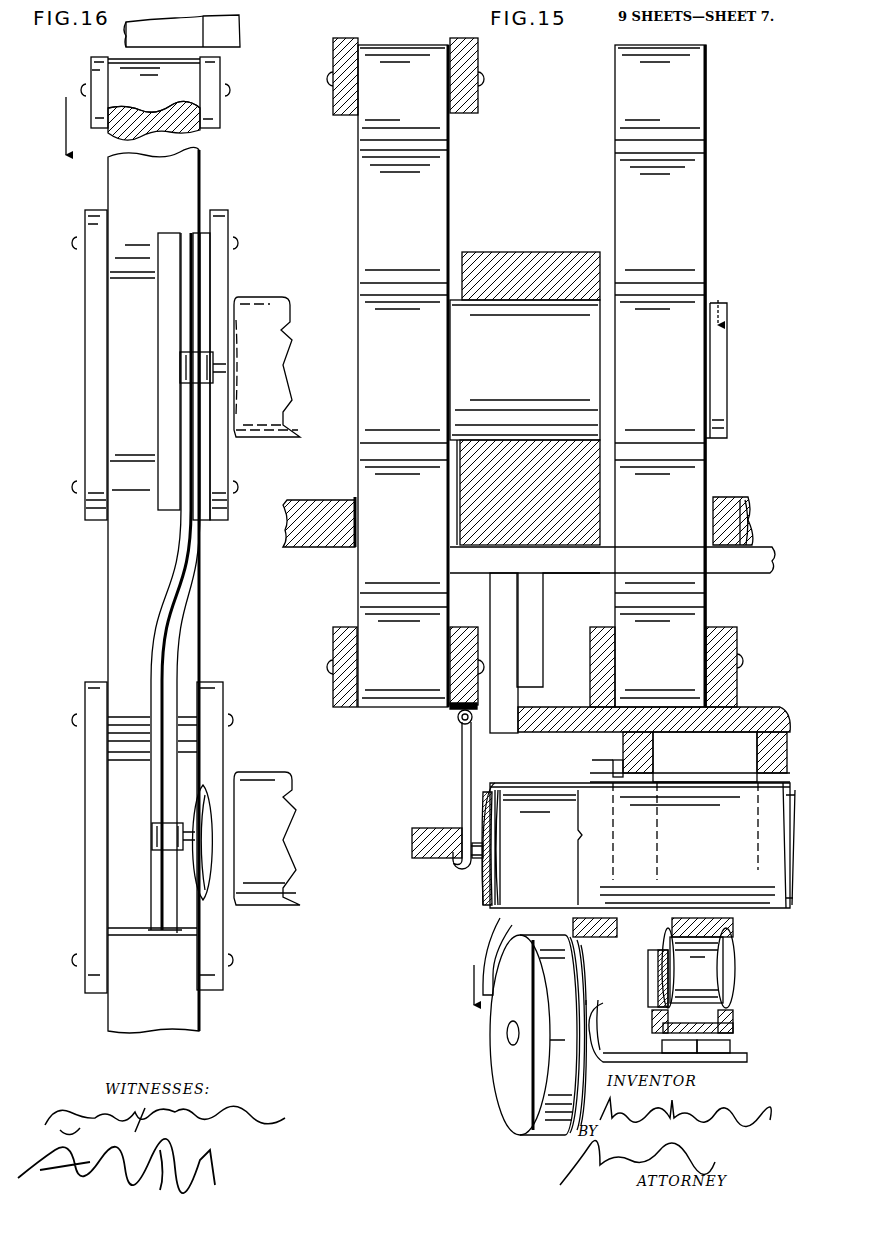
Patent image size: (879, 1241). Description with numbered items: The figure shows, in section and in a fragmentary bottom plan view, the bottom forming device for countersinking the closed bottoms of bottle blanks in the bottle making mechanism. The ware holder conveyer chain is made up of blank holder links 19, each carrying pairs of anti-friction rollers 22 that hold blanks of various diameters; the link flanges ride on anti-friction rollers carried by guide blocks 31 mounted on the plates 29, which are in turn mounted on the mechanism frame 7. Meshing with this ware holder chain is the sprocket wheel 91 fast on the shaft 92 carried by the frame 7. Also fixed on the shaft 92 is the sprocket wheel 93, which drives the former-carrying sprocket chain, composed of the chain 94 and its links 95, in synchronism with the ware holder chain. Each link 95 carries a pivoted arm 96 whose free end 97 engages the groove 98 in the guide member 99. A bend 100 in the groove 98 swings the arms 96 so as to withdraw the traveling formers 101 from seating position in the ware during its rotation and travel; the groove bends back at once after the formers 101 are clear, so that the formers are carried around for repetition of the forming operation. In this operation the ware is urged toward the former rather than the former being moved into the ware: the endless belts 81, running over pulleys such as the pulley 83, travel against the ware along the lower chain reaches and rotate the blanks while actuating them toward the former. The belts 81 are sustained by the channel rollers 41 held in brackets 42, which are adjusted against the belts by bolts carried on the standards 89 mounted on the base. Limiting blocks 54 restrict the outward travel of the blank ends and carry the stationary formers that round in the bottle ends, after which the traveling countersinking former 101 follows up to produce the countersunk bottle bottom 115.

In FIG. 16, the limiting block 54 is at (238, 47).
In FIG. 16, the link of the former-carrying sprocket chain 95 is at (222, 107).
In FIG. 15, the link of the former-carrying sprocket chain 95 is at (478, 112).
In FIG. 16, the sprocket chain 94 is at (205, 172).
In FIG. 16, the groove 98 is at (193, 277).
In FIG. 15, the groove 98 is at (447, 863).
In FIG. 16, the free end of pivoted arm 97 is at (198, 352).
In FIG. 15, the free end of pivoted arm 97 is at (477, 868).
In FIG. 16, the guide member 99 is at (157, 398).
In FIG. 15, the guide member 99 is at (412, 841).
In FIG. 16, the countersunk bottle bottom 115 is at (250, 440).
In FIG. 15, the countersunk bottle bottom 115 is at (490, 903).
In FIG. 16, the bend in groove 100 is at (155, 638).
In FIG. 16, the traveling former 101 is at (208, 805).
In FIG. 15, the traveling former 101 is at (487, 873).
In FIG. 15, the sprocket wheel 91 is at (615, 104).
In FIG. 15, the sprocket wheel 93 is at (452, 204).
In FIG. 15, the shaft 92 is at (505, 300).
In FIG. 15, the mechanism frame 7 is at (728, 497).
In FIG. 15, the plate 29 is at (738, 545).
In FIG. 15, the blank holder link 19 is at (737, 688).
In FIG. 15, the guide block 31 is at (492, 710).
In FIG. 15, the pivoted arm 96 is at (460, 777).
In FIG. 15, the anti-friction roller 22 is at (603, 772).
In FIG. 15, the endless belt 81 is at (490, 952).
In FIG. 15, the pulley 83 is at (490, 1037).
In FIG. 15, the channel roller 41 is at (735, 958).
In FIG. 15, the bracket 42 is at (717, 1017).
In FIG. 15, the standard 89 is at (740, 1057).